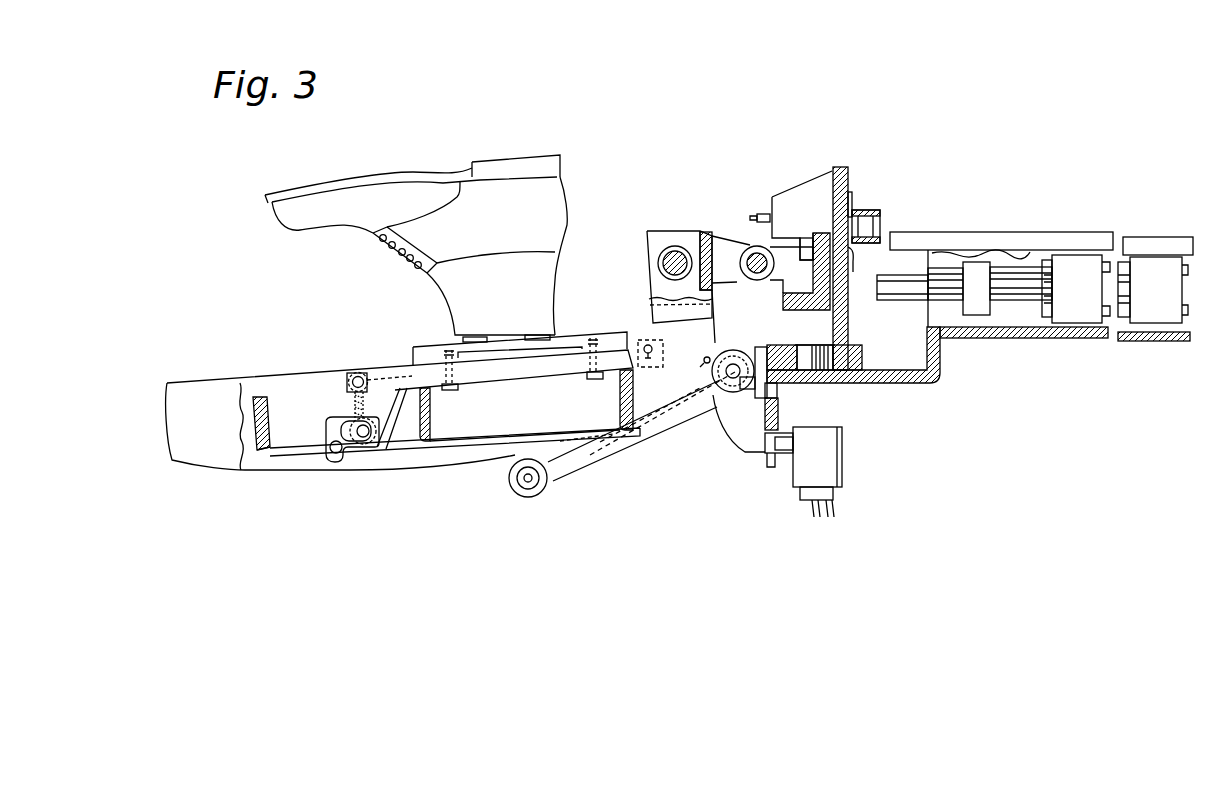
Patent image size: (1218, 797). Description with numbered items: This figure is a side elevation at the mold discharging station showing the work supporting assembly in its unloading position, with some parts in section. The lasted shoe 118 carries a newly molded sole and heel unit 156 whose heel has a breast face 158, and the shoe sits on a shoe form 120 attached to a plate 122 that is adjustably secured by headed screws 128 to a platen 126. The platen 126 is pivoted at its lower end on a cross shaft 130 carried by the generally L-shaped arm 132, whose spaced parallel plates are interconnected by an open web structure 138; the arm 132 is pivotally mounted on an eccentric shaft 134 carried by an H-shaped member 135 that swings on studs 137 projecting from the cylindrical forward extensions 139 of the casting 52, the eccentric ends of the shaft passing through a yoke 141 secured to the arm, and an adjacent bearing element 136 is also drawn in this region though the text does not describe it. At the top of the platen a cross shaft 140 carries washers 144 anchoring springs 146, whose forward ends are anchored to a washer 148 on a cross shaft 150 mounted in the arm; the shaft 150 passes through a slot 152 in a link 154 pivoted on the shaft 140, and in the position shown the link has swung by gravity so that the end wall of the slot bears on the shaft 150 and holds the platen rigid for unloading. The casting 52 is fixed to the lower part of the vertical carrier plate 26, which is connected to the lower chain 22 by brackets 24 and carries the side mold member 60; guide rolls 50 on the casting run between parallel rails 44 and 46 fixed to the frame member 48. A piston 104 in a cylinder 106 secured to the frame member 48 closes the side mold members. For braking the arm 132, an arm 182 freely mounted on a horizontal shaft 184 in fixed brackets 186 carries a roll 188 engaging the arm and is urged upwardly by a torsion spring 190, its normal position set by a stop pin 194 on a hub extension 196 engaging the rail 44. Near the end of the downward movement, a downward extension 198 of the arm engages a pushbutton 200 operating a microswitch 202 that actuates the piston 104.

The lower chain 22 is at (882, 232).
The brackets 24 is at (845, 207).
The plate 26 is at (840, 170).
The rail 44 is at (786, 347).
The rail 46 is at (847, 347).
The frame member 48 is at (890, 378).
The guide rolls 50 is at (812, 350).
The casting 52 is at (783, 328).
The side mold member 60 is at (798, 188).
The piston 104 is at (900, 293).
The cylinder 106 is at (1140, 258).
The lasted shoe 118 is at (555, 215).
The shoe form 120 is at (555, 278).
The plate 122 is at (420, 346).
The platen 126 is at (410, 358).
The headed screws 128 is at (450, 390).
The cross shaft 130 is at (640, 348).
The arm 132 is at (647, 343).
The eccentric shaft 134 is at (660, 272).
The H-shaped member 135 is at (733, 284).
The pivot bearing 136 is at (672, 236).
The studs 137 is at (755, 250).
The open web structure 138 is at (477, 440).
The cylindrical forward extensions 139 is at (778, 243).
The cross shaft 140 is at (347, 374).
The yoke 141 is at (683, 314).
The washers 144 is at (358, 372).
The springs 146 is at (353, 402).
The washer 148 is at (337, 428).
The cross shaft 150 is at (376, 430).
The slot 152 is at (327, 438).
The link 154 is at (380, 402).
The sole and heel unit 156 is at (560, 166).
The breast face 158 is at (472, 164).
The arm 182 is at (595, 465).
The horizontal shaft 184 is at (737, 390).
The brackets 186 is at (765, 431).
The roll 188 is at (528, 497).
The torsion spring 190 is at (697, 437).
The stop pin 194 is at (704, 362).
The extension 196 is at (725, 347).
The downward extension 198 is at (740, 453).
The pushbutton 200 is at (768, 457).
The microswitch 202 is at (800, 478).